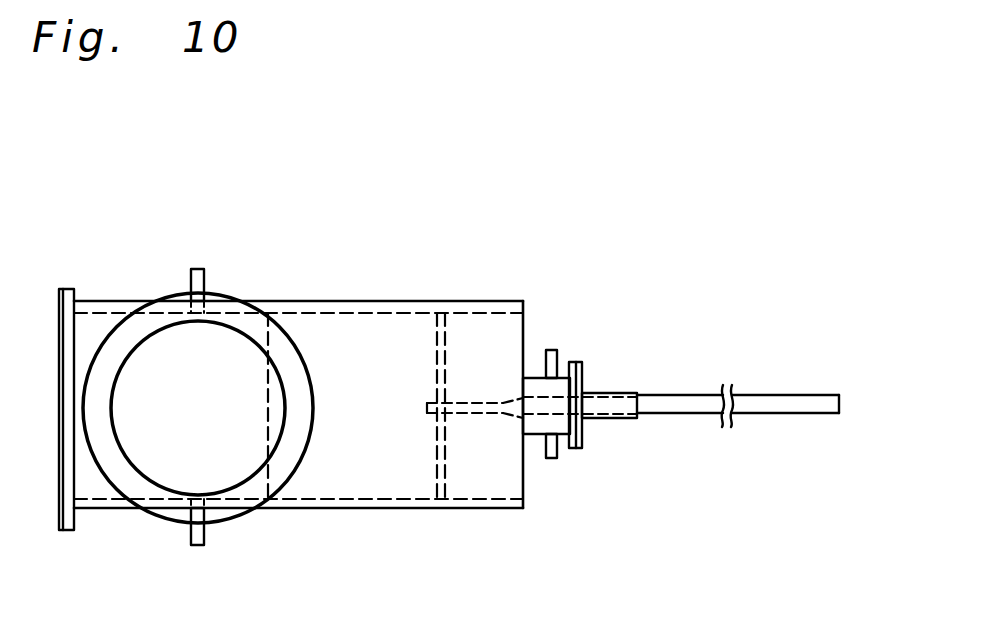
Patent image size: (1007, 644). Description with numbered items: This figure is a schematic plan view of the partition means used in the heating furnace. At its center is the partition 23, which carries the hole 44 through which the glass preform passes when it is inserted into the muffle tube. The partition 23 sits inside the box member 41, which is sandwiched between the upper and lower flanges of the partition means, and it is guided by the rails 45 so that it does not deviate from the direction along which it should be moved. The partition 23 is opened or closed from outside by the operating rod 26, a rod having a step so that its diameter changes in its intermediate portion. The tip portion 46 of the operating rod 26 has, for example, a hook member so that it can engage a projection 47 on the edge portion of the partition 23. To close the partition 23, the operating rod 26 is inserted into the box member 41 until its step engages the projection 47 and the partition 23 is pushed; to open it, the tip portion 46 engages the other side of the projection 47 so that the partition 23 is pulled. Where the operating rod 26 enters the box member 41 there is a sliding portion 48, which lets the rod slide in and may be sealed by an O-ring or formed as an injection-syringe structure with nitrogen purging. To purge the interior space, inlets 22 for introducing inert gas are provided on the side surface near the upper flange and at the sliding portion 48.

The inlets 22 is at (198, 268).
The partition 23 is at (352, 330).
The operating rod 26 is at (793, 413).
The box member 41 is at (350, 510).
The hole 44 is at (167, 462).
The rails 45 is at (478, 307).
The tip portion 46 is at (427, 413).
The projection 47 is at (442, 373).
The sliding portion 48 is at (527, 458).